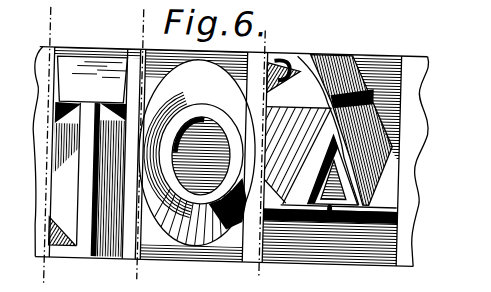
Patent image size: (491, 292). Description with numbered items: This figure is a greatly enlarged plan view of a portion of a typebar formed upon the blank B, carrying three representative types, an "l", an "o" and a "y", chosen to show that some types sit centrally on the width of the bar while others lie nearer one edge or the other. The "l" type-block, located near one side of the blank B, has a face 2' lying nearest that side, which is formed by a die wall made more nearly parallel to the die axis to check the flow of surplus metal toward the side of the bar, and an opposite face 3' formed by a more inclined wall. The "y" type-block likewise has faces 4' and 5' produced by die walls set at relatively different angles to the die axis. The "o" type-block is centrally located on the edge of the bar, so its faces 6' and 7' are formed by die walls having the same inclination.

The blank B is at (234, 156).
The face of the type-block 2' is at (86, 196).
The face of the type-block 3' is at (97, 58).
The face of the type-block 4' is at (329, 250).
The face of the type-block 5' is at (333, 116).
The face of the type-block 6' is at (194, 191).
The face of the type-block 7' is at (213, 129).